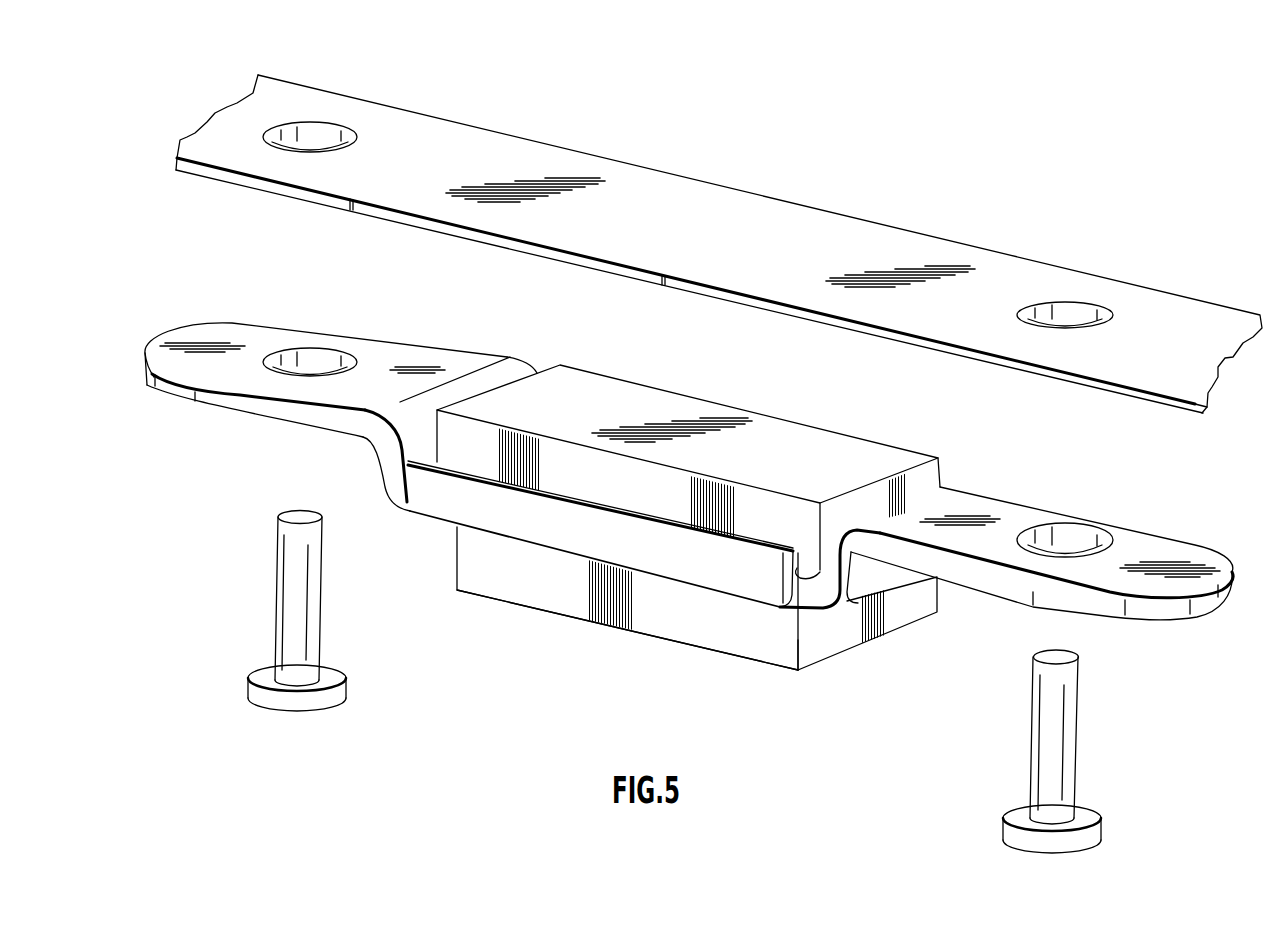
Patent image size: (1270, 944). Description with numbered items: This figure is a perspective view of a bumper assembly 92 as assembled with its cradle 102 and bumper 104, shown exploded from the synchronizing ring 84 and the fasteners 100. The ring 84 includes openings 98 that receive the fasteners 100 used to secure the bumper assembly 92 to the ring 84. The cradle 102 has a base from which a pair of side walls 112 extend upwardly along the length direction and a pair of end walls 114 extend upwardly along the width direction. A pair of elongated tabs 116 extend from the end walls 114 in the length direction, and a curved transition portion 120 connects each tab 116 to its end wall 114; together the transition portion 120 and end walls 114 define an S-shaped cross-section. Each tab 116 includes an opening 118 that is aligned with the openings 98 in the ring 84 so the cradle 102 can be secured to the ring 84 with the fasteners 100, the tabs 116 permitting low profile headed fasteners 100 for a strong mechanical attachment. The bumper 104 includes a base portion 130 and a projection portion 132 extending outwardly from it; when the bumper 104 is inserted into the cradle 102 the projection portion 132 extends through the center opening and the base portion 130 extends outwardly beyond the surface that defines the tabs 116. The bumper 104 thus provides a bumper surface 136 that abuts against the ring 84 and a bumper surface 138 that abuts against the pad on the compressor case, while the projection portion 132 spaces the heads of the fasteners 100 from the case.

The synchronizing ring 84 is at (831, 207).
The openings 98 is at (323, 130).
The bumper assembly 92 is at (410, 640).
The elongated tabs 116 is at (222, 365).
The opening 118 is at (303, 358).
The curved transition portion 120 is at (373, 444).
The end walls 114 is at (391, 498).
The side walls 112 is at (438, 527).
The cradle 102 is at (1027, 493).
The base portion 130 is at (940, 455).
The bumper surface 136 is at (818, 453).
The projection portion 132 is at (568, 603).
The bumper surface 138 is at (667, 645).
The bumper 104 is at (798, 673).
The fasteners 100 is at (287, 617).